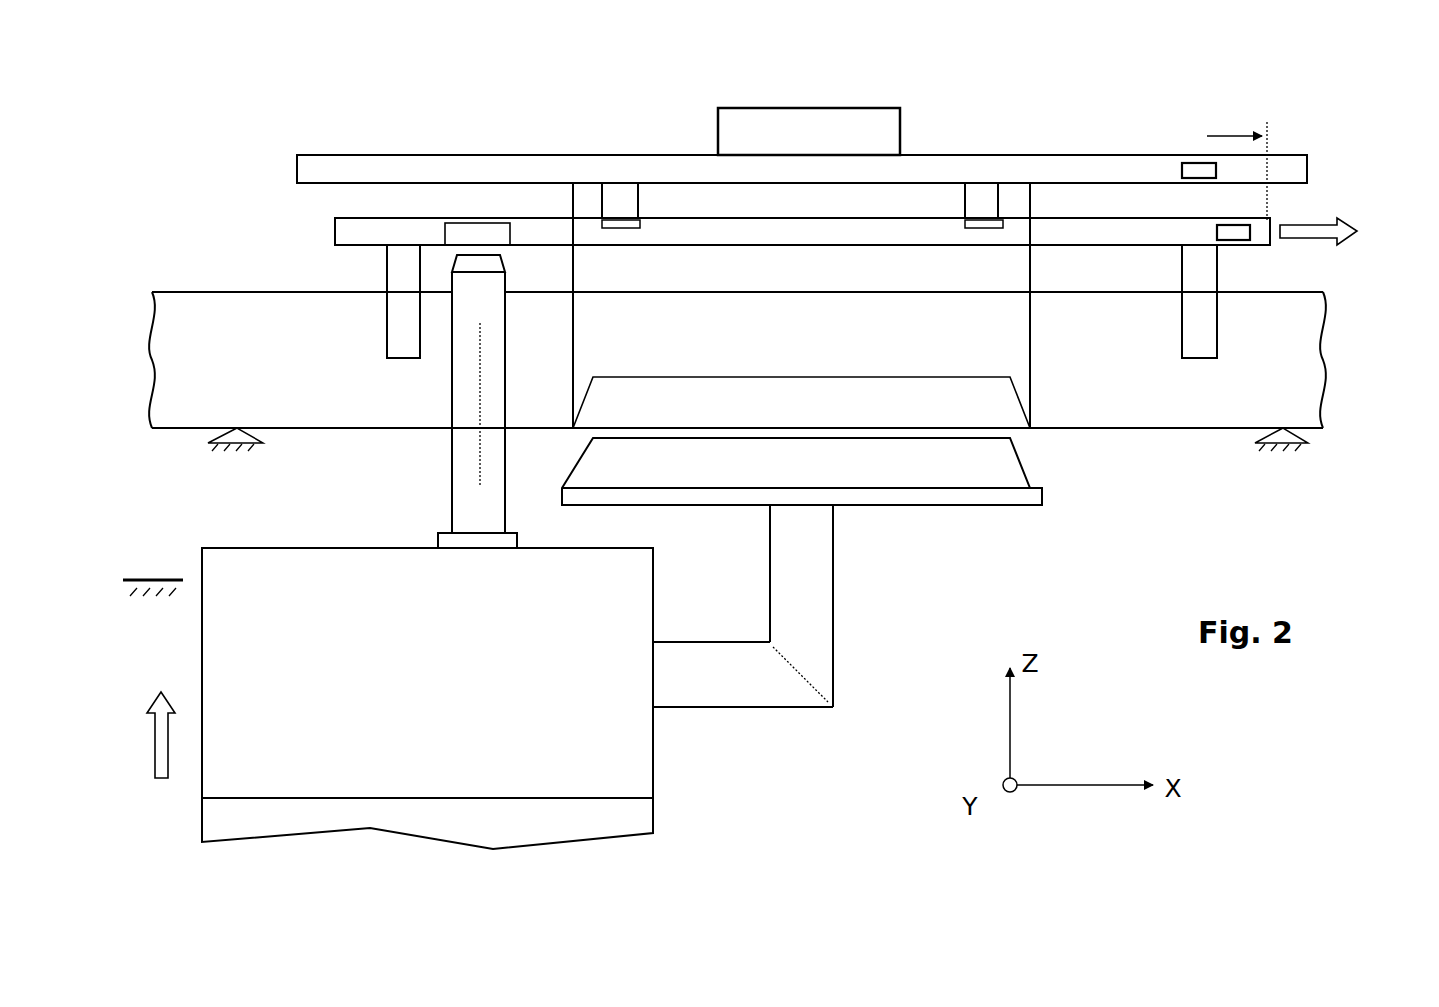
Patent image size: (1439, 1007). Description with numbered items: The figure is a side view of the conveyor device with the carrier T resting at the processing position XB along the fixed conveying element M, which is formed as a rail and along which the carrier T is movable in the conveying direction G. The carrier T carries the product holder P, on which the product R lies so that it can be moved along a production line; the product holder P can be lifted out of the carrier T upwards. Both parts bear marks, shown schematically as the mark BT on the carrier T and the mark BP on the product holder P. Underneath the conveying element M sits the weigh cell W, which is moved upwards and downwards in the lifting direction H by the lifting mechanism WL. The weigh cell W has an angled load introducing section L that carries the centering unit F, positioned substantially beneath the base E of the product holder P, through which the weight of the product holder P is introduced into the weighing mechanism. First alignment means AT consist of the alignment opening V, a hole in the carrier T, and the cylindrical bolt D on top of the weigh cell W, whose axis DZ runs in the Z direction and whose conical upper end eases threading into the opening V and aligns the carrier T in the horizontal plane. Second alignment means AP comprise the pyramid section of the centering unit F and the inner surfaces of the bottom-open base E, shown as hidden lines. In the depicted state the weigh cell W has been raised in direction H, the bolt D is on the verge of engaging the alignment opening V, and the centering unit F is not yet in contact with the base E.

The product holder P is at (442, 167).
The product R is at (888, 107).
The mark on product holder BP is at (1190, 165).
The processing position XB is at (1231, 160).
The conveying direction G is at (1348, 218).
The carrier T is at (345, 233).
The alignment opening V is at (508, 231).
The mark on carrier BT is at (1227, 240).
The conveying element M is at (1290, 312).
The base of the product holder E is at (938, 350).
The first alignment means AT is at (523, 299).
The bolt D is at (462, 385).
The axis of the bolt DZ is at (462, 467).
The centering unit F is at (878, 465).
The second alignment means AP is at (1045, 450).
The load introducing section L is at (815, 623).
The weigh cell W is at (481, 657).
The lifting mechanism WL is at (635, 818).
The lifting direction H is at (152, 727).